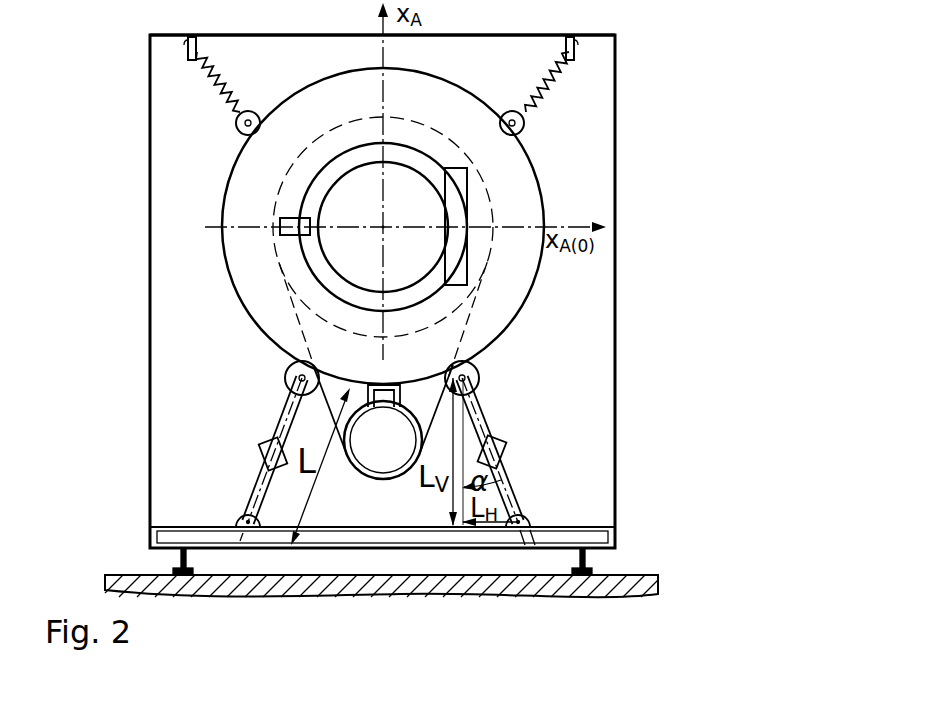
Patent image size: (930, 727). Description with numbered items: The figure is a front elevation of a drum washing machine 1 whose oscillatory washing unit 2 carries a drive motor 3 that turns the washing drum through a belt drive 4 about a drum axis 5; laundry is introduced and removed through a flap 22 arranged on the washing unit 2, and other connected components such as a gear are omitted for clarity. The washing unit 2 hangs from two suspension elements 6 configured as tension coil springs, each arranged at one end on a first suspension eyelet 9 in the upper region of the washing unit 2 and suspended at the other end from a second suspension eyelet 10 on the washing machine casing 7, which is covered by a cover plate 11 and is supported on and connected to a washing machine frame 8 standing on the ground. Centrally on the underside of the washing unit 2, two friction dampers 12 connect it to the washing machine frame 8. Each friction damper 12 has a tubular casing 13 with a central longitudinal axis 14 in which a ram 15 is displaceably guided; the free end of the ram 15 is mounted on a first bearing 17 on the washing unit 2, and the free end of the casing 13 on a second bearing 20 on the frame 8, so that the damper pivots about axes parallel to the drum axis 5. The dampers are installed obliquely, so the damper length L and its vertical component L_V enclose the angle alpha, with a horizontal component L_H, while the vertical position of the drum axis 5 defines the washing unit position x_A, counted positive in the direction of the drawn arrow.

The drum washing machine 1 is at (600, 6).
The oscillatory washing unit 2 is at (545, 180).
The drive motor 3 is at (383, 432).
The belt drive 4 is at (468, 318).
The drum axis 5 is at (383, 228).
The suspension element 6 is at (222, 90).
The washing machine casing 7 is at (150, 328).
The washing machine frame 8 is at (152, 540).
The first suspension eyelet 9 is at (240, 131).
The second suspension eyelet 10 is at (187, 50).
The cover plate 11 is at (218, 36).
The friction damper 12 is at (243, 431).
The tubular casing 13 is at (262, 458).
The central longitudinal axis 14 is at (288, 372).
The ram 15 is at (287, 400).
The first bearing 17 is at (290, 384).
The second bearing 20 is at (240, 518).
The flap 22 is at (306, 199).